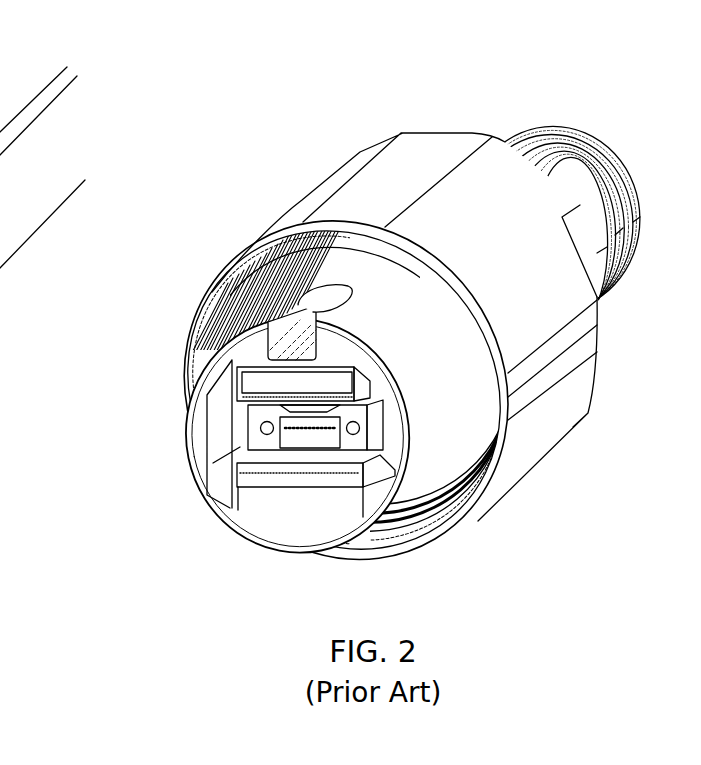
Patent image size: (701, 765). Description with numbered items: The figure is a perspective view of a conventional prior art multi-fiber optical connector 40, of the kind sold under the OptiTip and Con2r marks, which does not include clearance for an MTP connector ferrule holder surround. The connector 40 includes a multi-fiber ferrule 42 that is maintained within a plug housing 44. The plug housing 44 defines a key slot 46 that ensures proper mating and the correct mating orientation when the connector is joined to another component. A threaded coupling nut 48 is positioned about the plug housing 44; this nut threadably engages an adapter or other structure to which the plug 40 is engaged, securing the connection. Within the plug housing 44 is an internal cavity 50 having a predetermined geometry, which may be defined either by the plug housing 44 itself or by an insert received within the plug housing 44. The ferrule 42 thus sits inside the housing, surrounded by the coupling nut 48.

The multi-fiber optical connector 40 is at (424, 88).
The multi-fiber ferrule 42 is at (263, 443).
The plug housing 44 is at (443, 443).
The key slot 46 is at (300, 286).
The threaded coupling nut 48 is at (540, 442).
The internal cavity 50 is at (232, 413).